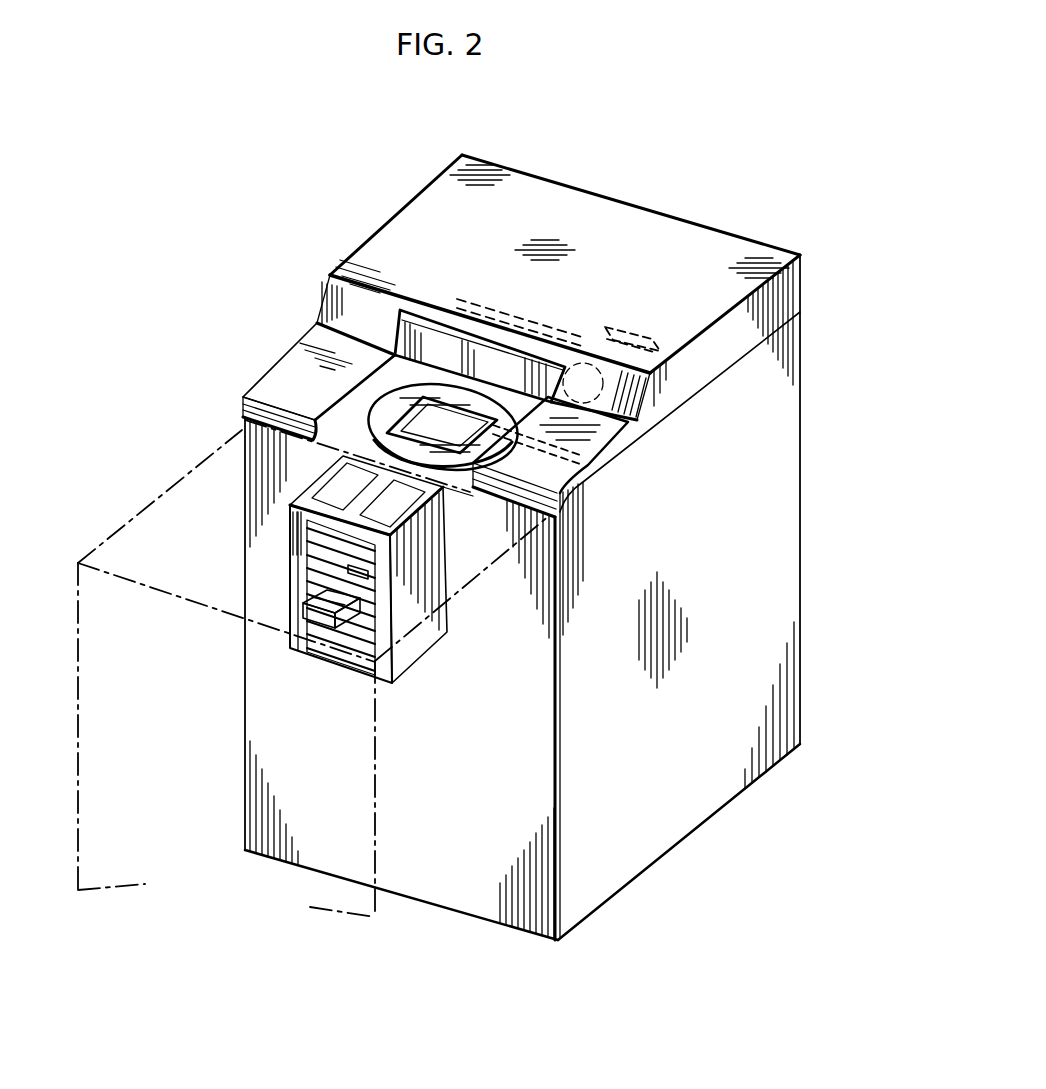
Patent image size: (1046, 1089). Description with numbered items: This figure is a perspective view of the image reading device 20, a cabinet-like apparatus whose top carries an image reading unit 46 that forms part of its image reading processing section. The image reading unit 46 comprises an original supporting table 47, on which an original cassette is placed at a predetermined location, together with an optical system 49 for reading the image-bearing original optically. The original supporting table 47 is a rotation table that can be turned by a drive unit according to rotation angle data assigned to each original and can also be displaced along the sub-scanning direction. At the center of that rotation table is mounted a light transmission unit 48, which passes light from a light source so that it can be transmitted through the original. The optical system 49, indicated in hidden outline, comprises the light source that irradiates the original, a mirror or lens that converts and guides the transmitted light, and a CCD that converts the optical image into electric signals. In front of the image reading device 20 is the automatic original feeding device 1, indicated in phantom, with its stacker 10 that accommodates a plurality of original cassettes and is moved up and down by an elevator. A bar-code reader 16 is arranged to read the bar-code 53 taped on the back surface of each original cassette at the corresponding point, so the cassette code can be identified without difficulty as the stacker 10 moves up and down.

The automatic original feeding device 1 is at (155, 498).
The stacker 10 is at (312, 488).
The bar-code reader 16 is at (317, 593).
The image reading device 20 is at (801, 512).
The image reading unit 46 is at (405, 383).
The original supporting table 47 is at (433, 428).
The light transmission unit 48 is at (387, 417).
The optical system 49 is at (600, 324).
The bar-code 53 is at (368, 572).